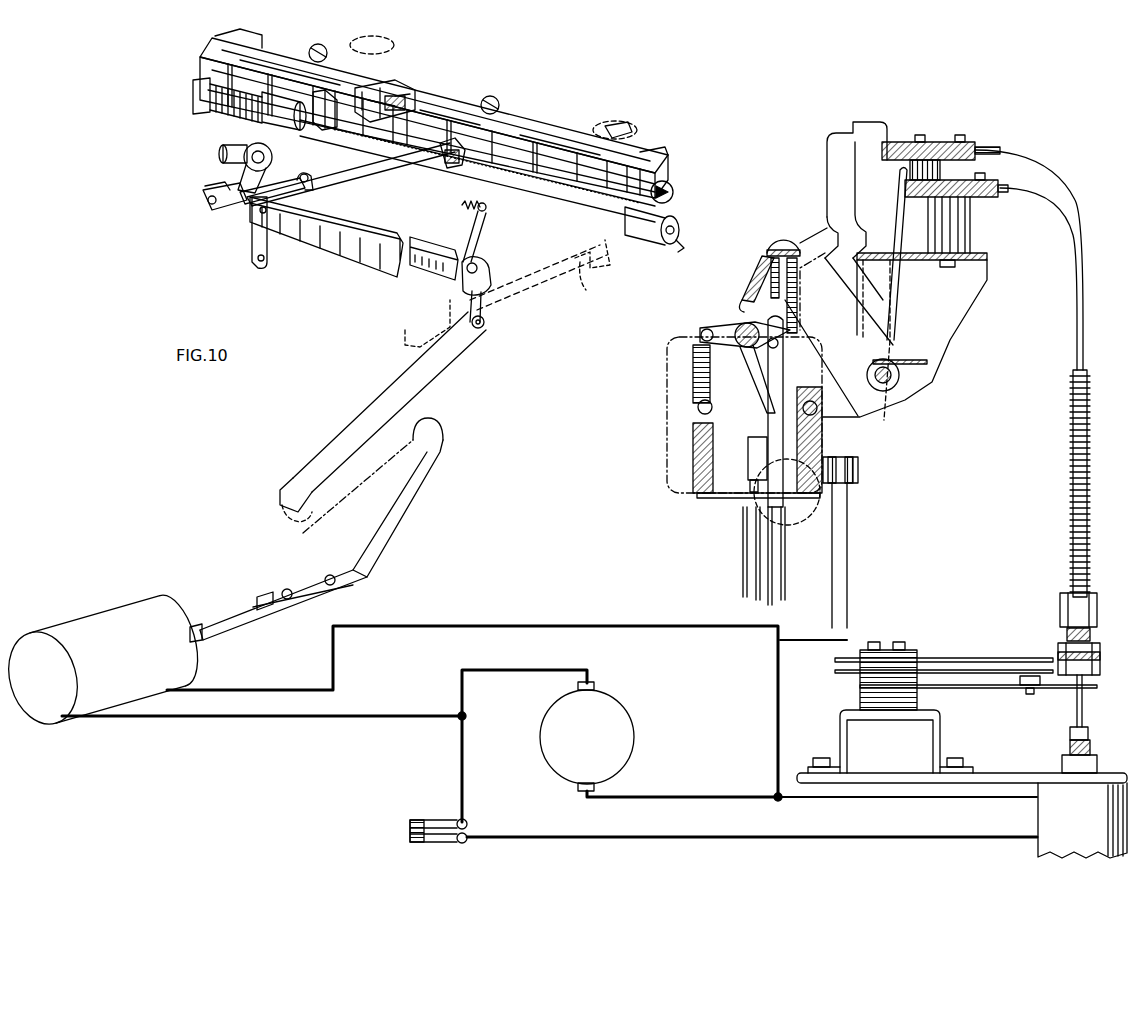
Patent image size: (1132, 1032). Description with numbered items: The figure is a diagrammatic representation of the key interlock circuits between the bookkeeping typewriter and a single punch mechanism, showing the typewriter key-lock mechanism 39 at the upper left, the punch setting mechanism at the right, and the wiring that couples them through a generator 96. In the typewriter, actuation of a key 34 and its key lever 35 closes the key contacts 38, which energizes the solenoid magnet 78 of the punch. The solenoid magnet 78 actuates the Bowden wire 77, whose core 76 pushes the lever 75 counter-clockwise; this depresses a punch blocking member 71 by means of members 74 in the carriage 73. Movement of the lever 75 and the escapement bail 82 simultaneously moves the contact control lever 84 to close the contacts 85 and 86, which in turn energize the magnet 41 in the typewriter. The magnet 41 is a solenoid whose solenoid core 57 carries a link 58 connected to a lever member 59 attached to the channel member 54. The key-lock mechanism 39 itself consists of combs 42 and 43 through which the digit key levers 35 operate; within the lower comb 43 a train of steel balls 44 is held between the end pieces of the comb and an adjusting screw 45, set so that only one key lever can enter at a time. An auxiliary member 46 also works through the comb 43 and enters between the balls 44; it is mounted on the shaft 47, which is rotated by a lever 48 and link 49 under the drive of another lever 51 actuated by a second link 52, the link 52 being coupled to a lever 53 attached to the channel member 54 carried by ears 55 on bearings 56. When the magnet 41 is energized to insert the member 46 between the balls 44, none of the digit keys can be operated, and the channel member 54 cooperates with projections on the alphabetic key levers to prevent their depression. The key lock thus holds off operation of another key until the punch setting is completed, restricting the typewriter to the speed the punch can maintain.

The key 34 is at (384, 37).
The key lever 35 is at (300, 128).
The key contacts 38 is at (436, 822).
The key-lock mechanism 39 is at (663, 161).
The magnet 41 is at (108, 613).
The comb 42 is at (516, 126).
The comb 43 is at (553, 177).
The train of steel balls 44 is at (405, 87).
The adjusting screw 45 is at (673, 183).
The auxiliary member 46 is at (330, 128).
The shaft 47 is at (488, 211).
The lever 48 is at (452, 170).
The link 49 is at (396, 200).
The lever 51 is at (243, 160).
The link 52 is at (205, 206).
The lever 53 is at (308, 194).
The channel member 54 is at (321, 255).
The ears 55 is at (490, 276).
The bearings 56 is at (478, 263).
The solenoid core 57 is at (197, 627).
The link 58 is at (450, 361).
The lever member 59 is at (486, 318).
The blocking member 71 is at (770, 561).
The carriage 73 is at (695, 432).
The member 74 is at (749, 455).
The lever 75 is at (897, 226).
The core 76 is at (903, 188).
The Bowden wire 77 is at (1051, 161).
The solenoid magnet 78 is at (1010, 826).
The escapement bail 82 is at (866, 251).
The contact control lever 84 is at (878, 430).
The contacts 85 is at (849, 509).
The contacts 86 is at (851, 484).
The generator 96 is at (617, 738).